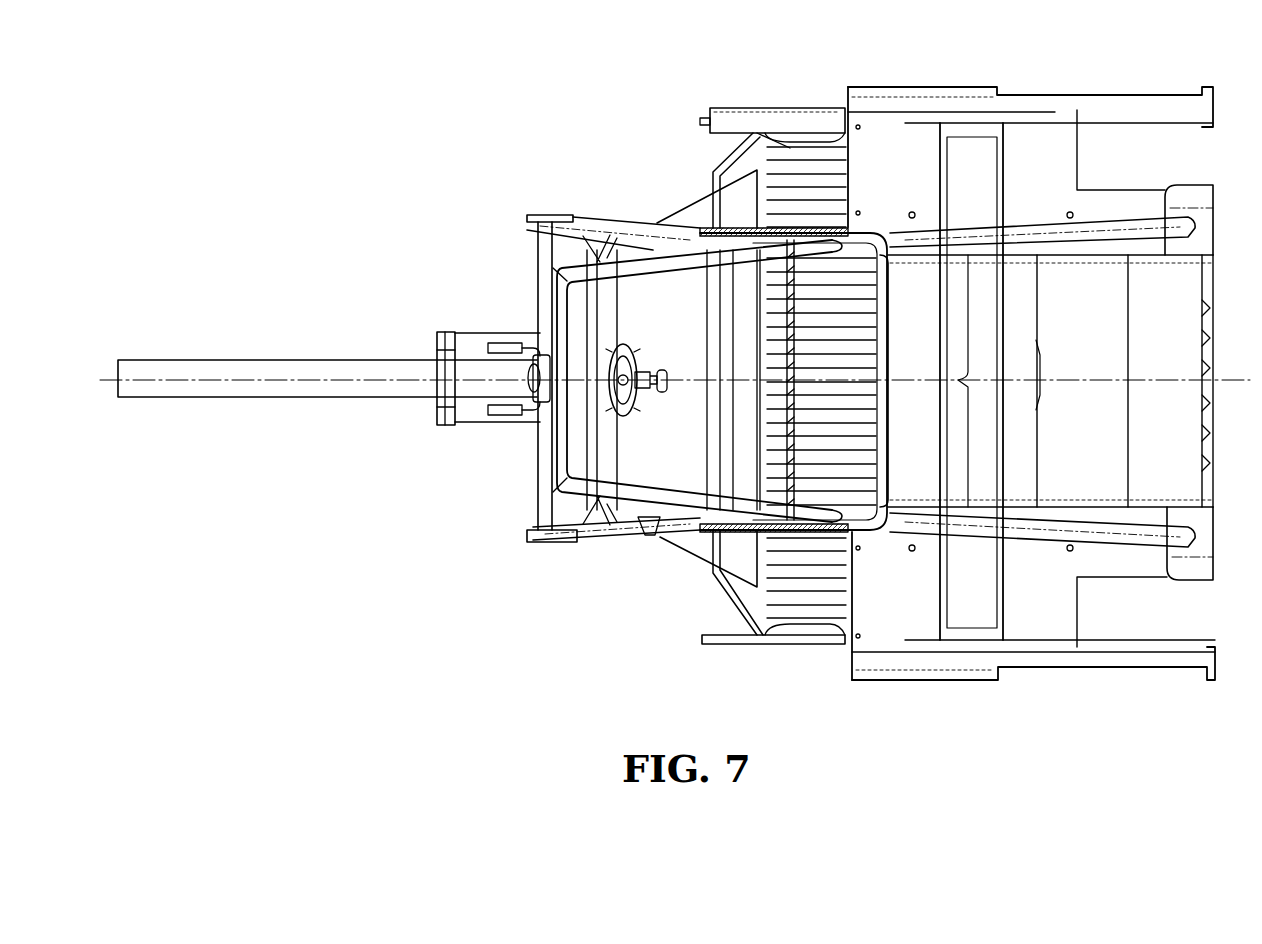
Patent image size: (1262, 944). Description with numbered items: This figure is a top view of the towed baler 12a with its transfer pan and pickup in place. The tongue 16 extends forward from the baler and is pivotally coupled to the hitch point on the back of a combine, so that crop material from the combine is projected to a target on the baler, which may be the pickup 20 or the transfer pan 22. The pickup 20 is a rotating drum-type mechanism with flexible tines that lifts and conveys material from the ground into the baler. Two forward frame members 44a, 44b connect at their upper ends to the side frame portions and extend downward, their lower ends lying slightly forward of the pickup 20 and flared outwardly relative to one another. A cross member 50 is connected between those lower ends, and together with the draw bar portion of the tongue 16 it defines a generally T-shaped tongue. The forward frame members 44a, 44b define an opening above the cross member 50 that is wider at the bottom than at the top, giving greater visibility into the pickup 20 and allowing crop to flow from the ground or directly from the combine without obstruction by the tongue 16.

The drive unit 12a is at (697, 82).
The tongue 16 is at (232, 366).
The pickup 20 is at (726, 679).
The transfer pan 22 is at (637, 442).
The forward frame member 44a is at (627, 232).
The forward frame member 44b is at (645, 495).
The cross member 50 is at (548, 495).